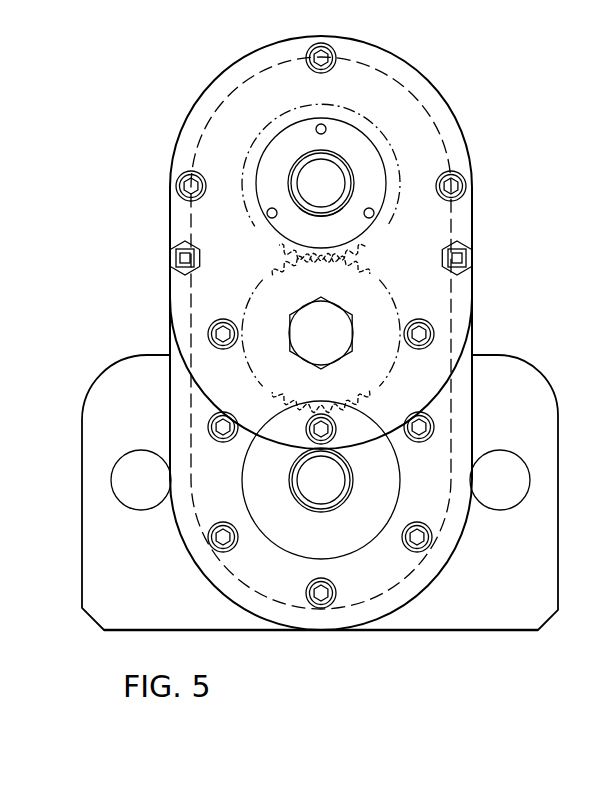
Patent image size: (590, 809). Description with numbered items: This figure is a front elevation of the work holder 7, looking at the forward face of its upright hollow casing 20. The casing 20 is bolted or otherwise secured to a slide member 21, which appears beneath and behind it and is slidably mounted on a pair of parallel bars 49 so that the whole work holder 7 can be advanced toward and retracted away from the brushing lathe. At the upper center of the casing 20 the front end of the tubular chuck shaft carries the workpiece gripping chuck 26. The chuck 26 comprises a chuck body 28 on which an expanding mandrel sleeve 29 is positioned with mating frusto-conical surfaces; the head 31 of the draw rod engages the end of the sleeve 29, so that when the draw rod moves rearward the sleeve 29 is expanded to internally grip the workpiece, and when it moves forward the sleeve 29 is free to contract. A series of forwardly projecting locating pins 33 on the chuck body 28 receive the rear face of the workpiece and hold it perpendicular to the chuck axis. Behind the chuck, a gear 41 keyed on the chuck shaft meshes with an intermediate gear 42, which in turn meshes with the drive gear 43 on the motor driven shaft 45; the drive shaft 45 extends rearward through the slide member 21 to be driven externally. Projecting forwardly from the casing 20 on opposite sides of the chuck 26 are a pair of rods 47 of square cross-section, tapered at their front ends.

The work holder 7 is at (407, 63).
The upright hollow casing 20 is at (458, 118).
The slide member 21 is at (543, 375).
The workpiece gripping chuck 26 is at (315, 213).
The chuck body 28 is at (376, 167).
The expanding mandrel sleeve 29 is at (302, 163).
The head 31 is at (330, 170).
The locating pins 33 is at (321, 124).
The gear 41 is at (367, 118).
The intermediate gear 42 is at (389, 296).
The drive gear 43 is at (397, 473).
The motor driven shaft 45 is at (334, 478).
The rods 47 is at (170, 260).
The parallel bars 49 is at (143, 455).